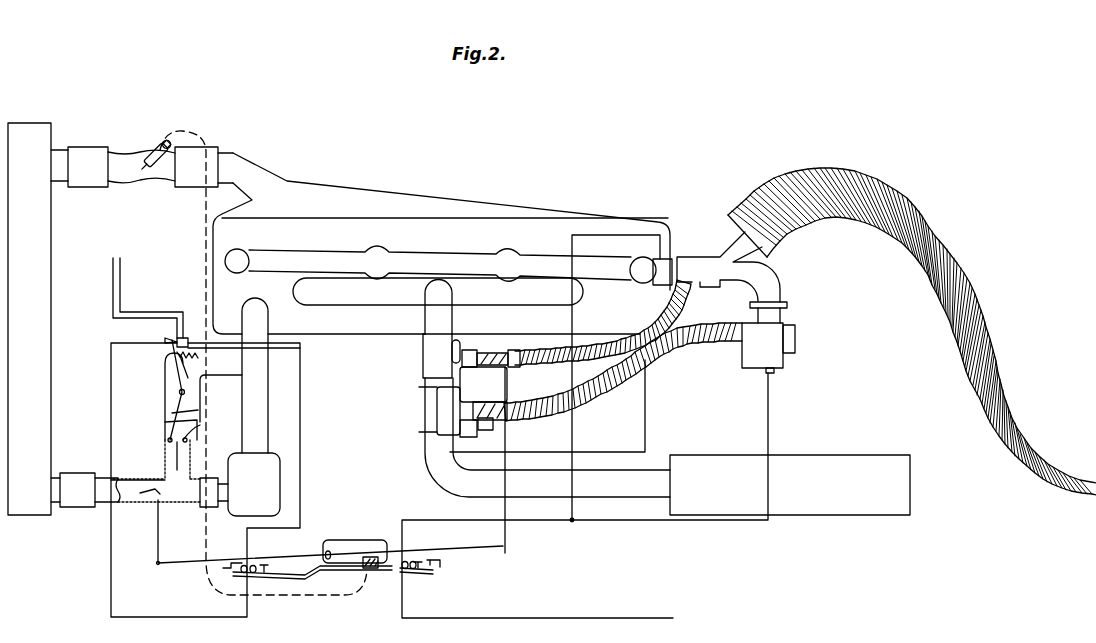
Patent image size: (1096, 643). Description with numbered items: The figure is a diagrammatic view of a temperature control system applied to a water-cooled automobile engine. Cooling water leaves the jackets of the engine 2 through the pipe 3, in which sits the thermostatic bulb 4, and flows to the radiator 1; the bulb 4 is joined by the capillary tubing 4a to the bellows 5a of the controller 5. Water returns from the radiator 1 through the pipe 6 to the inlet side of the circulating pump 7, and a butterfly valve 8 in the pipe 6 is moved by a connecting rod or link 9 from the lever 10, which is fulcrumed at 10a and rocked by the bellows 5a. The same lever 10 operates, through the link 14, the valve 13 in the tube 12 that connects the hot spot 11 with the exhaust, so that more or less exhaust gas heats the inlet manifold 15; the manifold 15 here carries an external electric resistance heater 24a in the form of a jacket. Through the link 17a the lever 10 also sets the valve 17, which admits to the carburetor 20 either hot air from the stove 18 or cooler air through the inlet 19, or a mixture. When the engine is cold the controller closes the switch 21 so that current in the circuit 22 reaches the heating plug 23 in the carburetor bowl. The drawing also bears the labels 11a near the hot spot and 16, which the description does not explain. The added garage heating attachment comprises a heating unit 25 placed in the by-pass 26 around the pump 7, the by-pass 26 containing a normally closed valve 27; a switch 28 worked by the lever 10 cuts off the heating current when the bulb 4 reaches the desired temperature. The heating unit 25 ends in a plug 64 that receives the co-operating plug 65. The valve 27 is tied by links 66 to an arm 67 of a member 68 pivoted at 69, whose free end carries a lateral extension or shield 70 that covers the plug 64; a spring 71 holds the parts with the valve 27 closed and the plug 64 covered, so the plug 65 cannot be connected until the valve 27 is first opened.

The radiator 1 is at (29, 319).
The engine 2 is at (441, 243).
The pipe 3 is at (123, 181).
The thermostatic bulb 4 is at (140, 167).
The capillary tubing 4a is at (206, 253).
The controller 5 is at (372, 548).
The bellows 5a is at (382, 572).
The pipe 6 is at (100, 473).
The circulating pump 7 is at (240, 407).
The butterfly valve 8 is at (148, 505).
The connecting rod or link 9 is at (160, 528).
The lever 10 is at (277, 558).
The fulcrum 10a is at (332, 553).
The hot spot 11 is at (732, 277).
The flexible air hose 11a is at (937, 290).
The tube 12 is at (545, 352).
The valve 13 is at (485, 352).
The connecting rod or link 14 is at (508, 384).
The inlet manifold 15 is at (535, 264).
The battery 16 is at (790, 485).
The valve 17 is at (483, 402).
The connecting rod or link 17a is at (506, 481).
The stove 18 is at (544, 389).
The inlet 19 is at (490, 431).
The carburetor 20 is at (768, 345).
The switch 21 is at (437, 566).
The circuit 22 is at (574, 432).
The heating plug 23 is at (775, 373).
The electric resistance heater 24a is at (665, 286).
The heating unit 25 is at (195, 354).
The by-pass 26 is at (165, 395).
The valve 27 is at (167, 462).
The switch 28 is at (235, 573).
The plug 64 is at (188, 342).
The co-operating plug 65 is at (187, 340).
The links 66 is at (190, 425).
The arm 67 is at (175, 413).
The member 68 is at (175, 367).
The pivot 69 is at (185, 393).
The lateral extension or shield 70 is at (167, 338).
The spring 71 is at (192, 369).